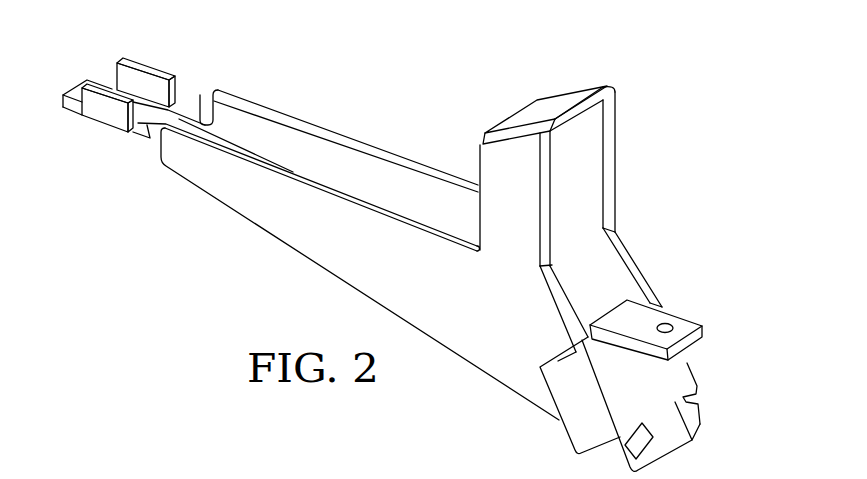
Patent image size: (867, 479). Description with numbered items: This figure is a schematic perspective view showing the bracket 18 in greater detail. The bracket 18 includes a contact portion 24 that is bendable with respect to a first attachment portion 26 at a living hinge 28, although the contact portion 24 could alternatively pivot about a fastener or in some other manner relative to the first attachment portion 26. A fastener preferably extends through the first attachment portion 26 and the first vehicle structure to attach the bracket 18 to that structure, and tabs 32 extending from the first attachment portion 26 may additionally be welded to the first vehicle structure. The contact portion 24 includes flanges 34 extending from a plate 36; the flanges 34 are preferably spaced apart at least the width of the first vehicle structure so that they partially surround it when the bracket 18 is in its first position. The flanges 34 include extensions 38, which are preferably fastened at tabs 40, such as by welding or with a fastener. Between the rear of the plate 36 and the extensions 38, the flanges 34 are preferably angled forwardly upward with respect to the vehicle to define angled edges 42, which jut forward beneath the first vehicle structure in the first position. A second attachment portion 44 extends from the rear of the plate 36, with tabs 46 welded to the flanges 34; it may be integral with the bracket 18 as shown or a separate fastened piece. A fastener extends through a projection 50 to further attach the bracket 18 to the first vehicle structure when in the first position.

The bracket 18 is at (722, 168).
The contact portion 24 is at (323, 272).
The first attachment portion 26 is at (72, 110).
The living hinge 28 is at (148, 138).
The tabs 32 is at (147, 67).
The flanges 34 is at (322, 186).
The plate 36 is at (200, 95).
The extensions 38 is at (552, 202).
The tabs 40 is at (587, 100).
The angled edges 42 is at (568, 300).
The second attachment portion 44 is at (697, 366).
The tabs 46 is at (654, 304).
The projection 50 is at (688, 312).